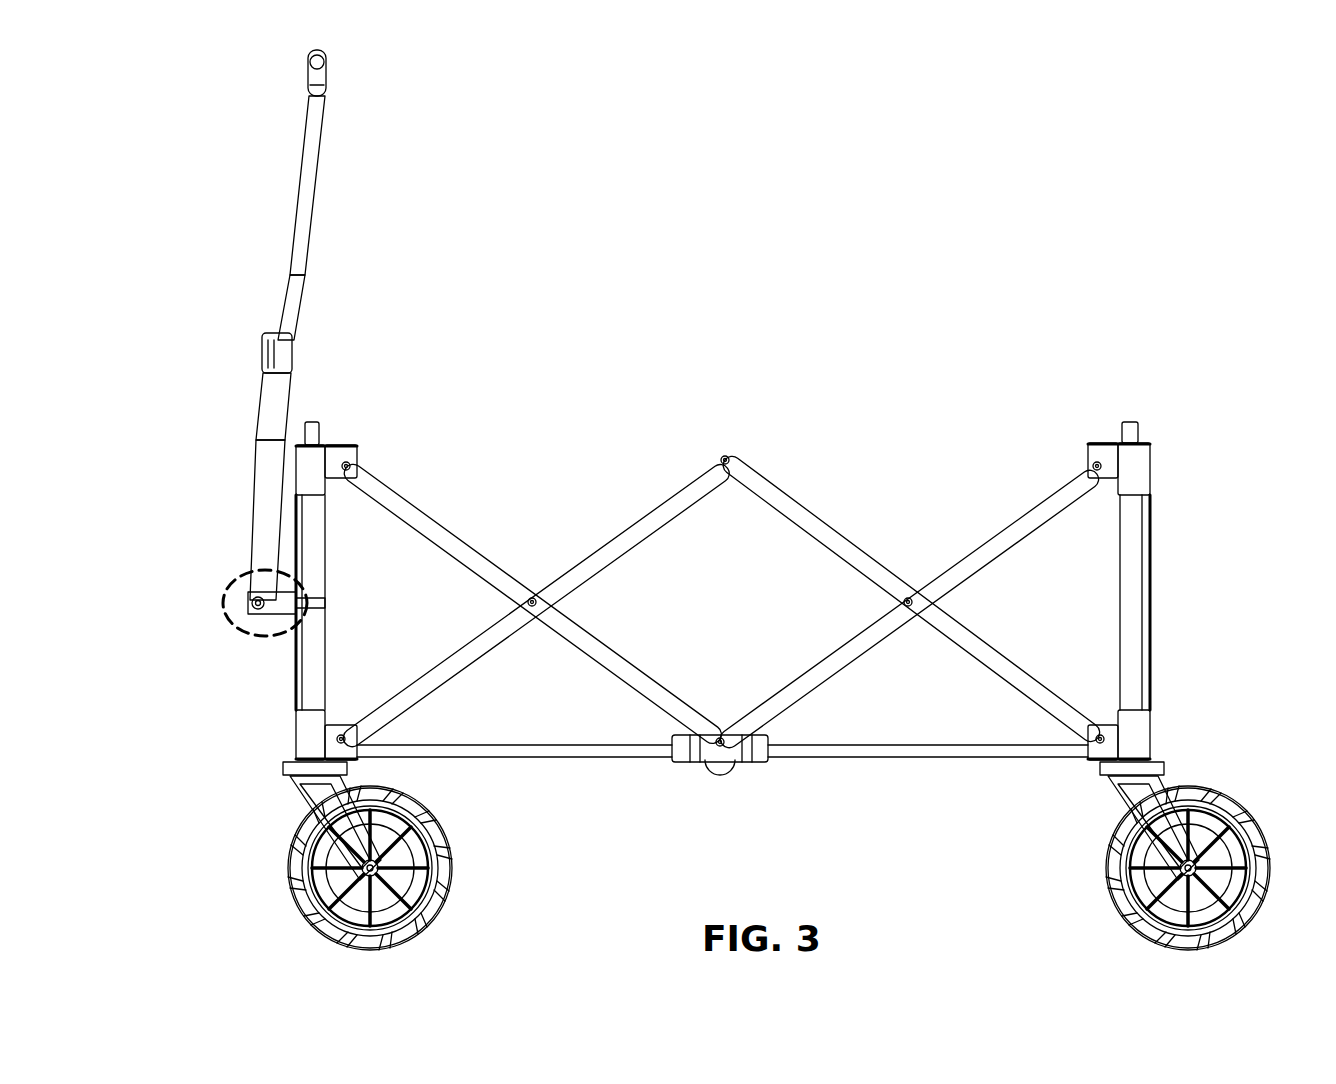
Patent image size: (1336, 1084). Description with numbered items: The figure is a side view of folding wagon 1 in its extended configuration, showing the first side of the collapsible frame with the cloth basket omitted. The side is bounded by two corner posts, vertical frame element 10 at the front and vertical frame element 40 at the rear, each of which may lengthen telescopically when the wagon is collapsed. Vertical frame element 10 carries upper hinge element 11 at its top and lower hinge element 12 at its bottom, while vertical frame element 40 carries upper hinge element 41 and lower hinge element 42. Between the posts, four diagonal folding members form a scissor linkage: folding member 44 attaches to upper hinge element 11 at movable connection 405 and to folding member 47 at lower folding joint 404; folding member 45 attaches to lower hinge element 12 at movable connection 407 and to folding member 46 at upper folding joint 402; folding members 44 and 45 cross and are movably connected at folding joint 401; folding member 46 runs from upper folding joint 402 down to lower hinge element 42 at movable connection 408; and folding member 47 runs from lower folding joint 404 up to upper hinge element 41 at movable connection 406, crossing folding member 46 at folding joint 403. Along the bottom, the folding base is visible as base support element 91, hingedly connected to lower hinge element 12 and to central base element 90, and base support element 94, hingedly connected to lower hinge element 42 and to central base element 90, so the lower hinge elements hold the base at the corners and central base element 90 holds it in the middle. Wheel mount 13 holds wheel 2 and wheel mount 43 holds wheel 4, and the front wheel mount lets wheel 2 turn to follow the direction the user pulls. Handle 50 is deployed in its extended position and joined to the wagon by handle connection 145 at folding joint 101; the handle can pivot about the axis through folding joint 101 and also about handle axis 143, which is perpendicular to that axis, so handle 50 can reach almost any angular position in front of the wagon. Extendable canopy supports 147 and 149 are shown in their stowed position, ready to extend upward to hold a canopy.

The folding wagon 1 is at (996, 226).
The wheel 2 is at (296, 882).
The wheel 4 is at (1122, 888).
The vertical frame element 10 is at (322, 521).
The upper hinge element 11 is at (306, 489).
The lower hinge element 12 is at (300, 742).
The wheel mount 13 is at (328, 803).
The vertical frame element 40 is at (1126, 683).
The upper hinge element 41 is at (1140, 452).
The lower hinge element 42 is at (1140, 717).
The wheel mount 43 is at (1160, 798).
The folding member 44 is at (482, 568).
The folding member 45 is at (636, 527).
The folding member 46 is at (812, 527).
The folding member 47 is at (1020, 522).
The handle 50 is at (294, 293).
The central base element 90 is at (690, 760).
The base support element 91 is at (555, 748).
The base support element 94 is at (940, 748).
The folding joint 101 is at (325, 605).
The handle axis 143 is at (256, 604).
The handle connection 145 is at (226, 585).
The extendable canopy support 147 is at (312, 434).
The extendable canopy support 149 is at (1130, 432).
The folding joint 401 is at (535, 610).
The upper folding joint 402 is at (718, 456).
The folding joint 403 is at (906, 603).
The lower folding joint 404 is at (722, 750).
The movable connection 405 is at (348, 465).
The movable connection 406 is at (1093, 463).
The movable connection 407 is at (342, 736).
The movable connection 408 is at (1098, 744).